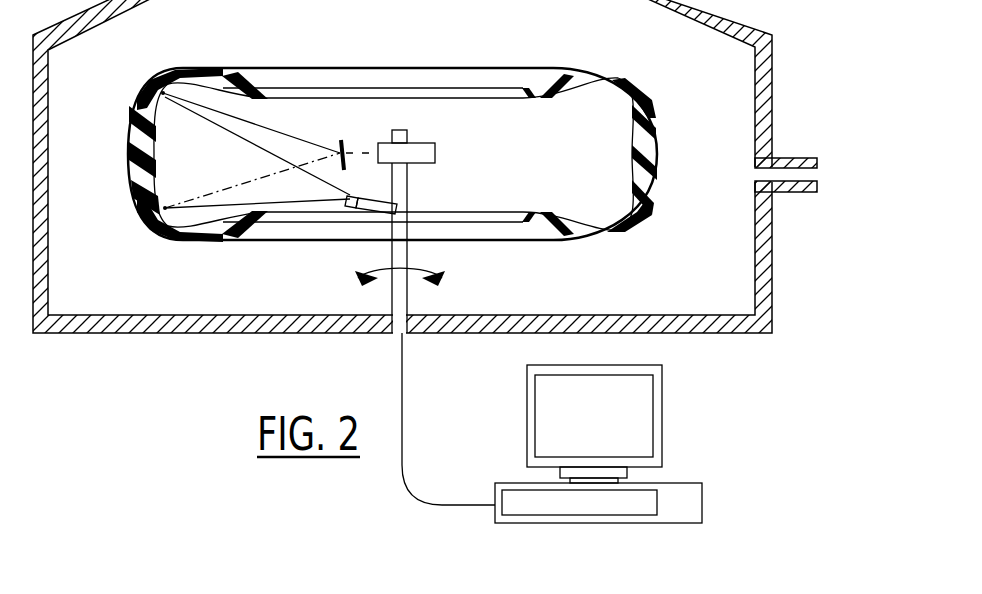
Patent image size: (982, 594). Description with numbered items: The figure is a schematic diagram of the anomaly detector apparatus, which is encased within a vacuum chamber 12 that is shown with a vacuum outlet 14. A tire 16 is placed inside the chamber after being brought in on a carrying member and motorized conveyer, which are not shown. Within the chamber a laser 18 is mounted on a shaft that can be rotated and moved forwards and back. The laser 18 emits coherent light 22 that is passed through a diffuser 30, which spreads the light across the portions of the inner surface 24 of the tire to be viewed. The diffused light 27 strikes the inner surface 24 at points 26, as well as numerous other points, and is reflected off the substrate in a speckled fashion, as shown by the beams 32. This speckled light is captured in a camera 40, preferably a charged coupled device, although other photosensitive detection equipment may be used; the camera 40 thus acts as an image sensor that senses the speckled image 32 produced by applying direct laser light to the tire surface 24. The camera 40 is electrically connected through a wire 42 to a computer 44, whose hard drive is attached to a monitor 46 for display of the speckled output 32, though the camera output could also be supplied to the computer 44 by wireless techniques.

The vacuum chamber 12 is at (778, 63).
The vacuum outlet 14 is at (822, 171).
The tire 16 is at (640, 78).
The laser 18 is at (436, 144).
The coherent light 22 is at (353, 152).
The inner surface 24 is at (155, 145).
The points 26 is at (166, 91).
The diffused light 27 is at (285, 137).
The diffuser 30 is at (341, 143).
The beams 32 is at (270, 200).
The camera 40 is at (380, 197).
The wire 42 is at (403, 404).
The computer 44 is at (583, 523).
The monitor 46 is at (664, 402).